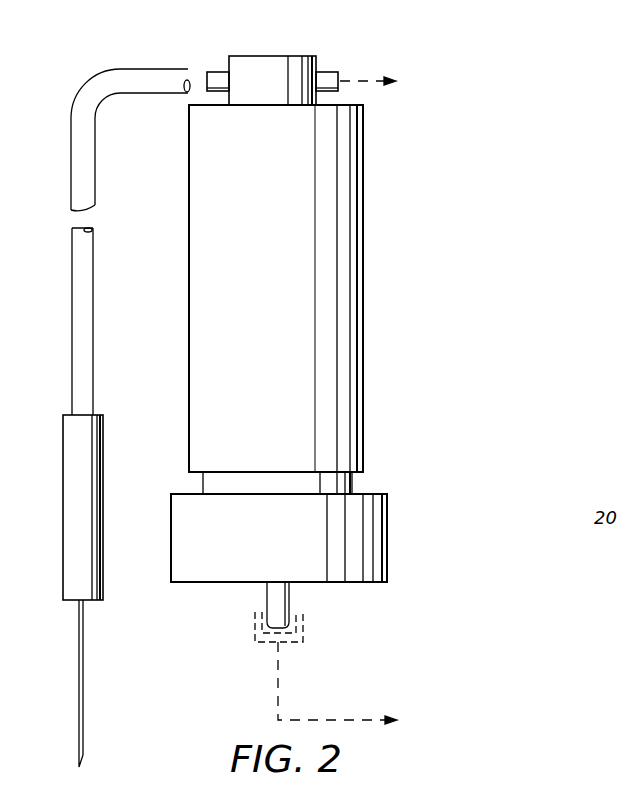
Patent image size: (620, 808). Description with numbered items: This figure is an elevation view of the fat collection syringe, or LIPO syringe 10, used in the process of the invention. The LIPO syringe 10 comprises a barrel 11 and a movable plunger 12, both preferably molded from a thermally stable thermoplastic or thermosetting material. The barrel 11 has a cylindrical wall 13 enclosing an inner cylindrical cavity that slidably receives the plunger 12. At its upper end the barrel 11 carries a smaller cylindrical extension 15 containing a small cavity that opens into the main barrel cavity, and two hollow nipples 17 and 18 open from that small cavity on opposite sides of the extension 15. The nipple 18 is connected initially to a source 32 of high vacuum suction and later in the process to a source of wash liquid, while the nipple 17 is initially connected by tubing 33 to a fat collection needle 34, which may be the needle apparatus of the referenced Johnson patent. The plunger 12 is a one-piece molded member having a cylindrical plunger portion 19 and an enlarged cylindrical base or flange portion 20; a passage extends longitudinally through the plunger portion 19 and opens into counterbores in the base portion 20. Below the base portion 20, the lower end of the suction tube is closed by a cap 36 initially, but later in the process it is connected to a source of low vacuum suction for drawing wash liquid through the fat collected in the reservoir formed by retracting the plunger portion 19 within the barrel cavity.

The LIPO syringe 10 is at (372, 299).
The barrel 11 is at (340, 262).
The movable plunger 12 is at (370, 535).
The cylindrical wall 13 is at (357, 182).
The cylindrical extension 15 is at (270, 65).
The hollow nipple 17 is at (220, 77).
The hollow nipple 18 is at (333, 76).
The cylindrical plunger portion 19 is at (210, 483).
The base or flange portion 20 is at (200, 572).
The source of high vacuum suction 32 is at (469, 82).
The tubing 33 is at (77, 157).
The needle 34 is at (72, 655).
The cap 36 is at (303, 642).